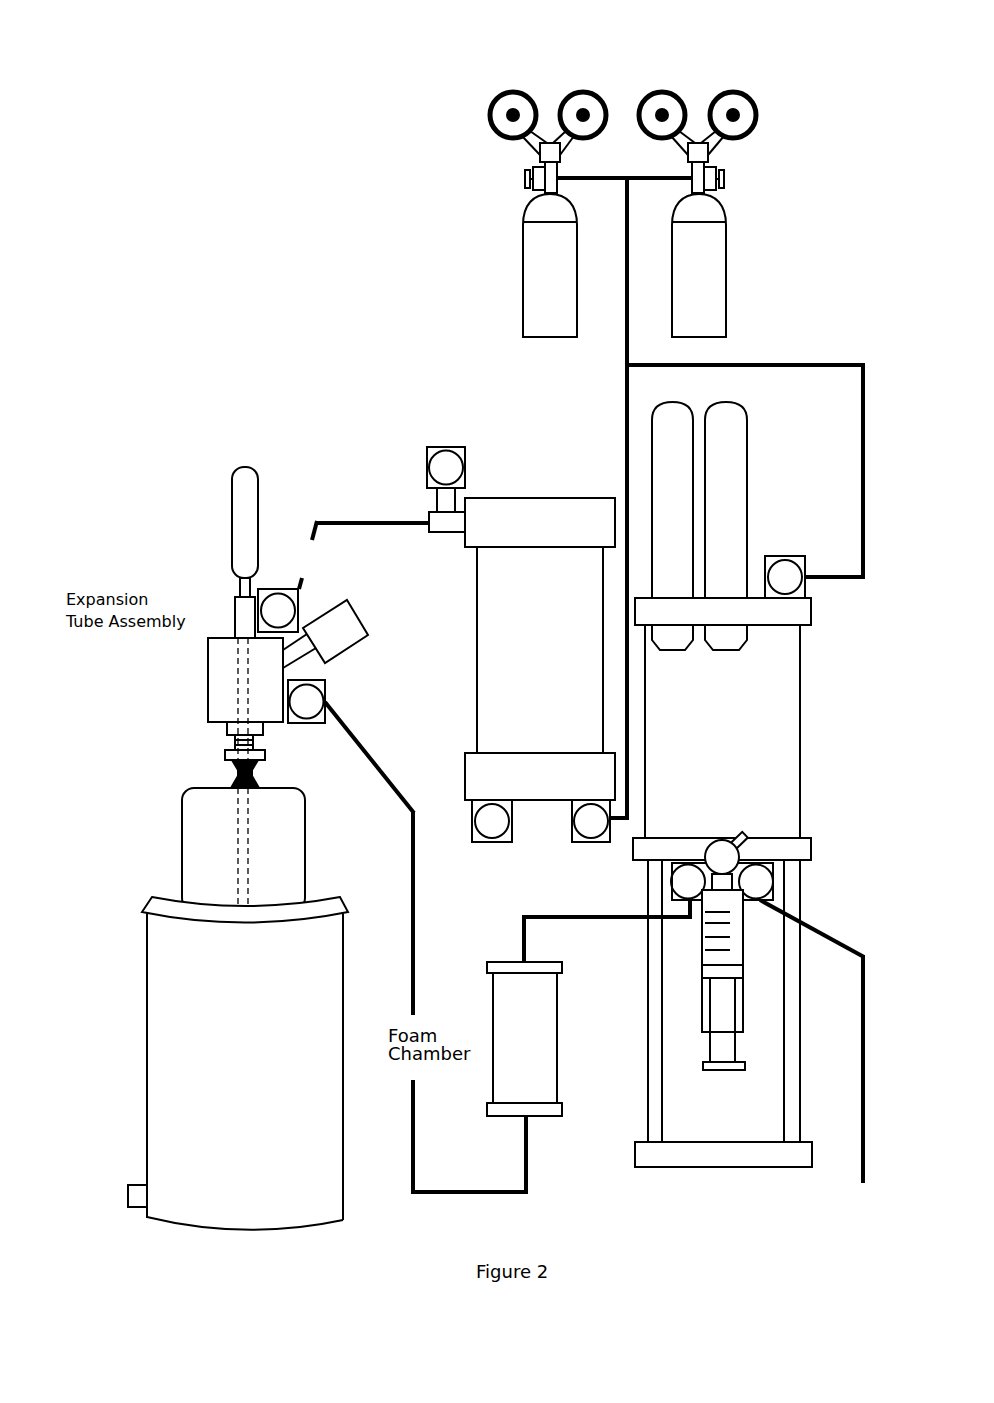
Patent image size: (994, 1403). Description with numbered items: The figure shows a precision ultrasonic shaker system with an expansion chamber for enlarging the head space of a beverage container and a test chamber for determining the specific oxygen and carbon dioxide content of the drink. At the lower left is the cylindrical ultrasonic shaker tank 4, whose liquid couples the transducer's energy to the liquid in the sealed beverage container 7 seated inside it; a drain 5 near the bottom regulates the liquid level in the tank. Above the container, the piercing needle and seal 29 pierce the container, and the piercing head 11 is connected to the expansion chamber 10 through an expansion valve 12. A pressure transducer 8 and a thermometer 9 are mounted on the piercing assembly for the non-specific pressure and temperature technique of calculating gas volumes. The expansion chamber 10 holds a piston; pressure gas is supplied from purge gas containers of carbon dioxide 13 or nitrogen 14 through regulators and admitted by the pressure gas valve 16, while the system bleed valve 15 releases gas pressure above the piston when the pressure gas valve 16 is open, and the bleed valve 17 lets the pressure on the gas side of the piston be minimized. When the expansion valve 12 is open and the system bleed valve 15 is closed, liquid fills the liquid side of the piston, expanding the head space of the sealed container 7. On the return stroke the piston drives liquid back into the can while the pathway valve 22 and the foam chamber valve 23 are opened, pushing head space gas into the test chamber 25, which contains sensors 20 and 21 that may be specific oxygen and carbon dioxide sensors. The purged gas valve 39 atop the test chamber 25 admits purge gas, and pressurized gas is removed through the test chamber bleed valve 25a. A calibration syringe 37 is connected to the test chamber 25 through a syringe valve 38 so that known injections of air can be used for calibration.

The ultrasonic shaker tank 4 is at (245, 1063).
The drain 5 is at (88, 1194).
The sealed beverage container 7 is at (243, 849).
The pressure transducer 8 is at (377, 630).
The thermometer 9 is at (150, 552).
The expansion chamber 10 is at (540, 649).
The piercing head 11 is at (164, 700).
The expansion valve 12 is at (311, 583).
The CO2 purge gas 13 is at (548, 173).
The N2 purge gas 14 is at (697, 173).
The system bleed valve 15 is at (398, 483).
The pressure gas valve 16 is at (567, 810).
The bleed valve 17 is at (464, 828).
The sensor 20 is at (576, 438).
The sensor 21 is at (734, 526).
The pathway valve 22 is at (408, 933).
The foam chamber valve 23 is at (590, 893).
The test chamber 25 is at (722, 882).
The test chamber bleed valve 25a is at (838, 1012).
The piercing needle and seal 29 is at (154, 754).
The calibration syringe 37 is at (726, 1001).
The syringe valve 38 is at (722, 845).
The purged gas valve 39 is at (796, 550).